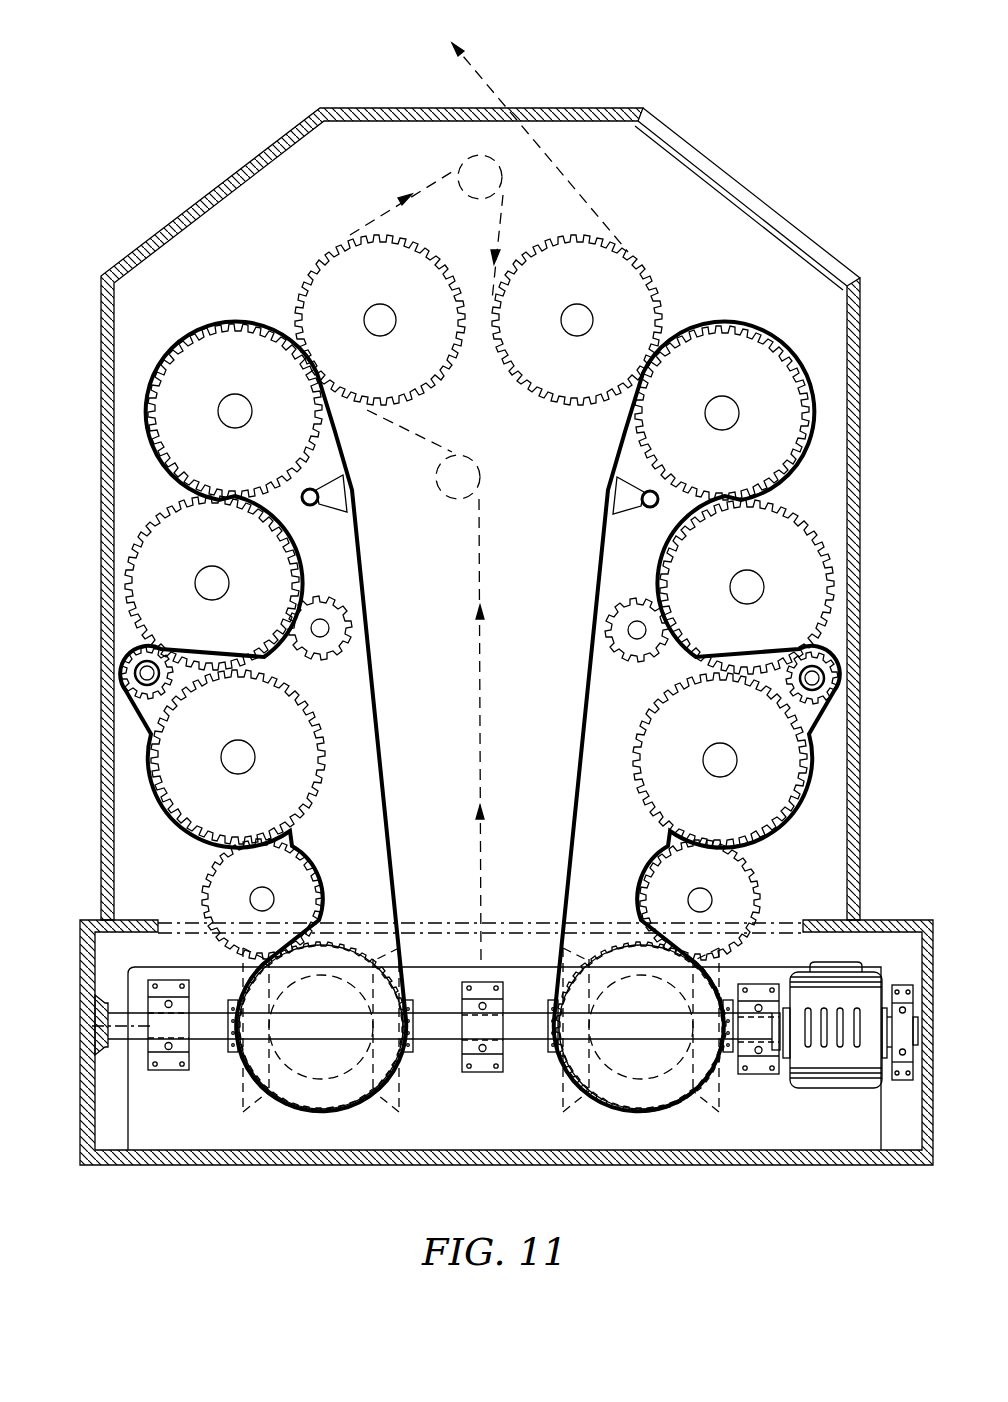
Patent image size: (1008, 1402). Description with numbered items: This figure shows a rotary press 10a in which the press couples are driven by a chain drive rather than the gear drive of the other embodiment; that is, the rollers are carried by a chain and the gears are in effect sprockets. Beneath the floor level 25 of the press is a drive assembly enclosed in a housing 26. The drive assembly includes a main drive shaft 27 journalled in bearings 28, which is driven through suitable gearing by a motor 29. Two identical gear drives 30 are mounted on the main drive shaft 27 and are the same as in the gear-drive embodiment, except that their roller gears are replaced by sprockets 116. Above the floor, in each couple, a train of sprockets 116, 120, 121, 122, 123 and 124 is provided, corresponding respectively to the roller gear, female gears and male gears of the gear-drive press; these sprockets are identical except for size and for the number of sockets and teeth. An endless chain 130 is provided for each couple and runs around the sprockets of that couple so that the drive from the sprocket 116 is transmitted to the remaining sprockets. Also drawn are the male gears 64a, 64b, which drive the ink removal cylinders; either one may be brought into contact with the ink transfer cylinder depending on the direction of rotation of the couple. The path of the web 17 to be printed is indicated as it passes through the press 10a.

The rotary press 10a is at (778, 202).
The web 17 is at (482, 746).
The floor level 25 is at (878, 920).
The housing 26 is at (740, 1173).
The main drive shaft 27 is at (525, 1027).
The bearings 28 is at (176, 1071).
The motor 29 is at (840, 1058).
The gear drives 30 is at (380, 1113).
The male gear 64a is at (322, 596).
The male gear 64b is at (146, 699).
The sprocket 116 is at (372, 905).
The sprocket 120 is at (274, 882).
The sprocket 121 is at (256, 724).
The sprocket 122 is at (232, 551).
The sprocket 123 is at (256, 385).
The sprocket 124 is at (400, 291).
The endless chain 130 is at (380, 706).